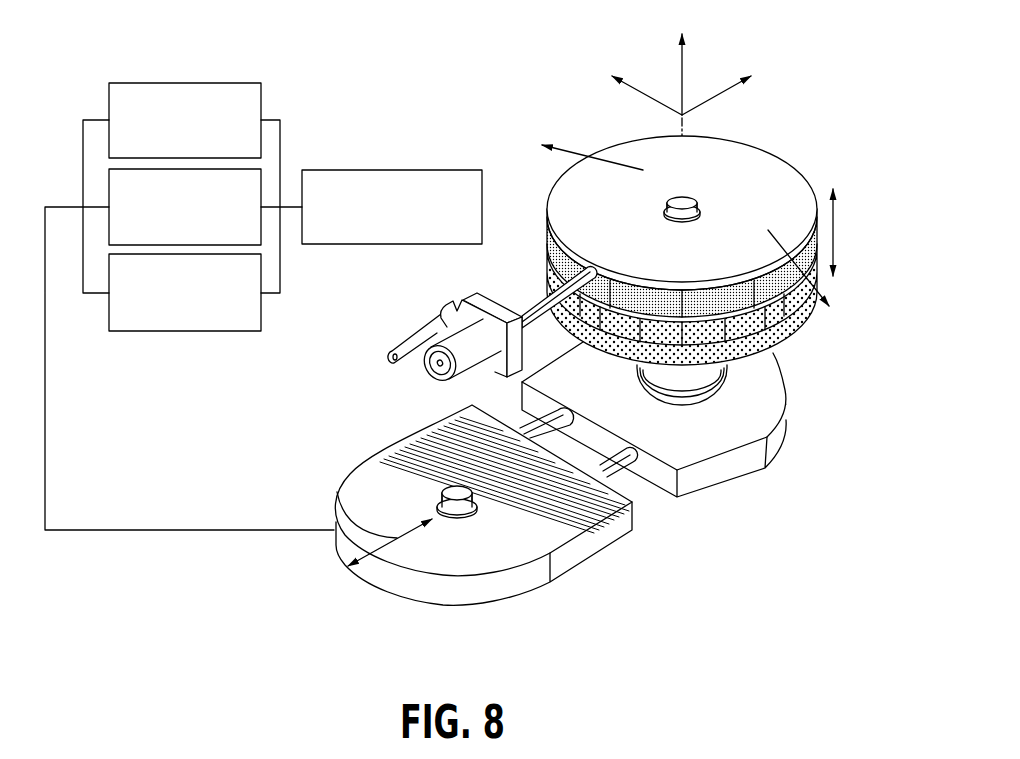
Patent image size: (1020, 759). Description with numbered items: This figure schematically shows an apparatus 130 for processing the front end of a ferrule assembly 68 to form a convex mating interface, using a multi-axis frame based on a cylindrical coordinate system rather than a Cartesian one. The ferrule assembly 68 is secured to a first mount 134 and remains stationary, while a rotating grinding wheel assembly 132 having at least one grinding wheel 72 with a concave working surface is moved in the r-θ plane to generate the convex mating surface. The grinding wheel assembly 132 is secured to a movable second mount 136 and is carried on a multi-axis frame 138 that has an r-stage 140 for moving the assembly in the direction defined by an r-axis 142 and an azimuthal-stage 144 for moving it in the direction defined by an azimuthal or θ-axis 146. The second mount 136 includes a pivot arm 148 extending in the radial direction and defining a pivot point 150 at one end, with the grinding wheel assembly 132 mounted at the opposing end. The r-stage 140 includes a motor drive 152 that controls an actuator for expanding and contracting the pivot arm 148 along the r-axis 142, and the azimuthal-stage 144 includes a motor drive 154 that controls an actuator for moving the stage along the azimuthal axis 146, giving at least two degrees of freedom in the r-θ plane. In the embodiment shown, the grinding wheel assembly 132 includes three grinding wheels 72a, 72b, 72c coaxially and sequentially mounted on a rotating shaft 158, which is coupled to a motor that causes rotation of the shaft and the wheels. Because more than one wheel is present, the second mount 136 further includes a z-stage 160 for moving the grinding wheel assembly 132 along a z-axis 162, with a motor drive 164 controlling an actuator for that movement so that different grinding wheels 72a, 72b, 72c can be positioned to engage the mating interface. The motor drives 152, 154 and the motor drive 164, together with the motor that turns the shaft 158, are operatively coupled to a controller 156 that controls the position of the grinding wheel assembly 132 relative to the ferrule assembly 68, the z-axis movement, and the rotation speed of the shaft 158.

The ferrule assembly 68 is at (531, 291).
The grinding wheel 72 is at (769, 154).
The grinding wheel 72a is at (772, 313).
The grinding wheel 72b is at (775, 342).
The grinding wheel 72c is at (548, 252).
The apparatus 130 is at (549, 79).
The grinding wheel assembly 132 is at (695, 276).
The first mount 134 is at (447, 297).
The second mount 136 is at (685, 497).
The multi-axis frame 138 is at (369, 589).
The r-stage 140 is at (658, 440).
The r-axis 142 is at (337, 493).
The azimuthal-stage 144 is at (532, 493).
The azimuthal axis 146 is at (578, 150).
The pivot arm 148 is at (517, 547).
The pivot point 150 is at (450, 486).
The motor drive 152 is at (240, 83).
The motor drive 154 is at (109, 185).
The controller 156 is at (387, 170).
The rotating shaft 158 is at (677, 199).
The z-stage 160 is at (731, 385).
The z-axis 162 is at (835, 230).
The motor drive 164 is at (213, 331).